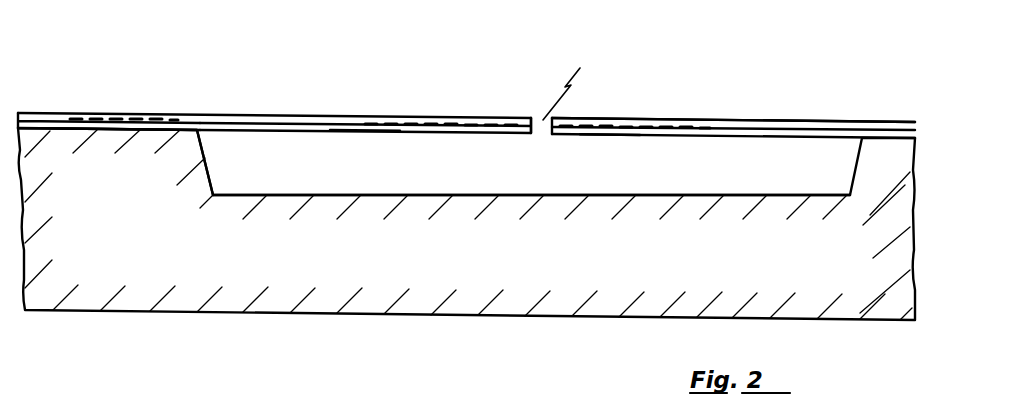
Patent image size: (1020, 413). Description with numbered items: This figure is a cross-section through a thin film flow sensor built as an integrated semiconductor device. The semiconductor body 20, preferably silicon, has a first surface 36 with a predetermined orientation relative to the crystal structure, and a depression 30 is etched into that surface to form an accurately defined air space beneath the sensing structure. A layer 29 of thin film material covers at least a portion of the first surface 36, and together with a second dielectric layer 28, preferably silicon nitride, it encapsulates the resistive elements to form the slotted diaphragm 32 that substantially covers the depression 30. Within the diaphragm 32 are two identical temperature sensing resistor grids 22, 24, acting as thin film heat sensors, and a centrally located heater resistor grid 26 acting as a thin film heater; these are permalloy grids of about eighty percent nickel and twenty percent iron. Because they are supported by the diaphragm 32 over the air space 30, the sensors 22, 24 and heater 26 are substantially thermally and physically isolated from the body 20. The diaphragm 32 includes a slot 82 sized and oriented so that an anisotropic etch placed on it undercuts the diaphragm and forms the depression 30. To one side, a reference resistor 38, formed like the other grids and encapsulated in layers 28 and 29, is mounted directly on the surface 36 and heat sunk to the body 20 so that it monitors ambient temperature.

The semiconductor body 20 is at (511, 268).
The temperature sensing resistor grid 22 is at (470, 110).
The temperature sensing resistor grid 24 is at (712, 113).
The heater resistor grid 26 is at (598, 115).
The dielectric layer 28 is at (344, 122).
The layer of thin film material 29 is at (397, 137).
The depression 30 is at (554, 191).
The slotted diaphragm 32 is at (356, 142).
The first surface 36 is at (162, 131).
The reference resistor 38 is at (177, 107).
The slot 82 is at (579, 88).